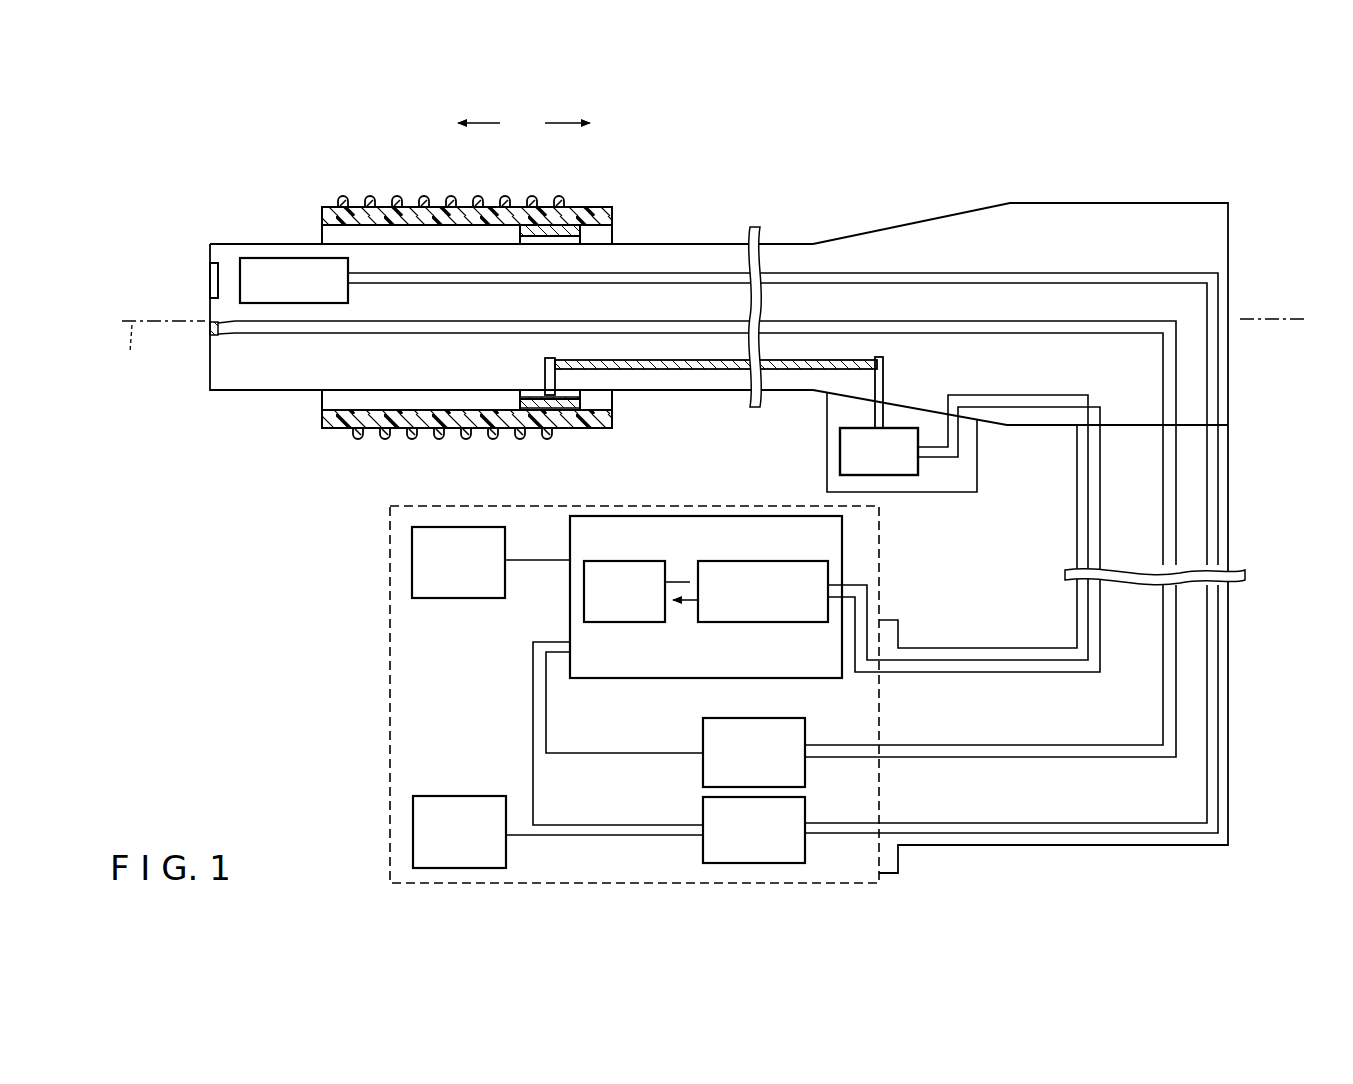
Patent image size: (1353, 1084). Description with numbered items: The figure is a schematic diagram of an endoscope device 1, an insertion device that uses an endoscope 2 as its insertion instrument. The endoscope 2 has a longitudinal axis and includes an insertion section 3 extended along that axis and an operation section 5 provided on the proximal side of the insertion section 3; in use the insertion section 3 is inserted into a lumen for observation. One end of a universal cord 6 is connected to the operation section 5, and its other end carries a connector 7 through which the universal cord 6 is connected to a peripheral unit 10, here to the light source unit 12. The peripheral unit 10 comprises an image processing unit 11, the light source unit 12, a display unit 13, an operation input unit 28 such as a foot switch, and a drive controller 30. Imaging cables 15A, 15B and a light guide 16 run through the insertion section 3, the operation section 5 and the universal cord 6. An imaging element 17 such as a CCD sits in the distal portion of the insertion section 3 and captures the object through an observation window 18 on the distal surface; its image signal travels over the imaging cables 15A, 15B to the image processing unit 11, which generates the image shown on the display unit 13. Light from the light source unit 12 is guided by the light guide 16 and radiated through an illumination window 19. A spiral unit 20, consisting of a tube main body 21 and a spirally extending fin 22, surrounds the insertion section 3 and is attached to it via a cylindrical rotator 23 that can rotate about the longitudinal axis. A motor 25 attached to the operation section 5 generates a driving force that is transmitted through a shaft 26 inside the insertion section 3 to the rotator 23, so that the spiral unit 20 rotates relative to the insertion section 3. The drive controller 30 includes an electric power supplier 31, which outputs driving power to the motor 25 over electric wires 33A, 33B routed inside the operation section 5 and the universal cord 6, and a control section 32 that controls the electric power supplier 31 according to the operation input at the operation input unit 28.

The endoscope device 1 is at (954, 168).
The endoscope 2 is at (809, 186).
The insertion section 3 is at (674, 239).
The operation section 5 is at (1151, 220).
The universal cord 6 is at (1242, 516).
The connector 7 is at (892, 628).
The peripheral unit 10 is at (785, 497).
The image processing unit 11 is at (703, 810).
The light source unit 12 is at (703, 735).
The display unit 13 is at (460, 796).
The imaging cable 15A is at (979, 822).
The imaging cable 15B is at (1072, 832).
The light guide 16 is at (1026, 751).
The imaging element 17 is at (348, 297).
The observation window 18 is at (210, 282).
The illumination window 19 is at (210, 333).
The spiral unit 20 is at (517, 192).
The tube main body 21 is at (438, 210).
The fin 22 is at (393, 196).
The rotator 23 is at (566, 408).
The motor 25 is at (918, 465).
The shaft 26 is at (798, 370).
The operation input unit 28 is at (460, 598).
The drive controller 30 is at (824, 545).
The electric power supplier 31 is at (775, 561).
The control section 32 is at (599, 622).
The electric wire 33A is at (1088, 484).
The electric wire 33B is at (1100, 520).